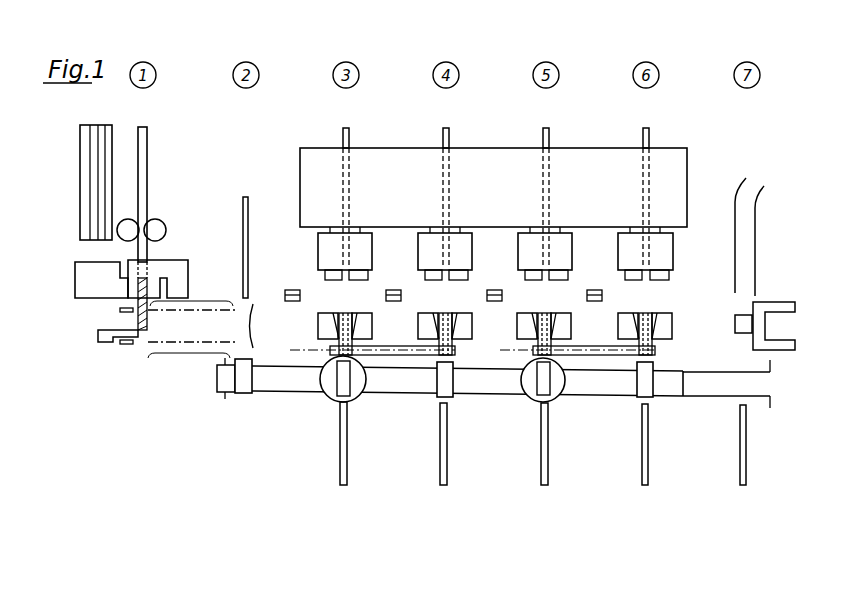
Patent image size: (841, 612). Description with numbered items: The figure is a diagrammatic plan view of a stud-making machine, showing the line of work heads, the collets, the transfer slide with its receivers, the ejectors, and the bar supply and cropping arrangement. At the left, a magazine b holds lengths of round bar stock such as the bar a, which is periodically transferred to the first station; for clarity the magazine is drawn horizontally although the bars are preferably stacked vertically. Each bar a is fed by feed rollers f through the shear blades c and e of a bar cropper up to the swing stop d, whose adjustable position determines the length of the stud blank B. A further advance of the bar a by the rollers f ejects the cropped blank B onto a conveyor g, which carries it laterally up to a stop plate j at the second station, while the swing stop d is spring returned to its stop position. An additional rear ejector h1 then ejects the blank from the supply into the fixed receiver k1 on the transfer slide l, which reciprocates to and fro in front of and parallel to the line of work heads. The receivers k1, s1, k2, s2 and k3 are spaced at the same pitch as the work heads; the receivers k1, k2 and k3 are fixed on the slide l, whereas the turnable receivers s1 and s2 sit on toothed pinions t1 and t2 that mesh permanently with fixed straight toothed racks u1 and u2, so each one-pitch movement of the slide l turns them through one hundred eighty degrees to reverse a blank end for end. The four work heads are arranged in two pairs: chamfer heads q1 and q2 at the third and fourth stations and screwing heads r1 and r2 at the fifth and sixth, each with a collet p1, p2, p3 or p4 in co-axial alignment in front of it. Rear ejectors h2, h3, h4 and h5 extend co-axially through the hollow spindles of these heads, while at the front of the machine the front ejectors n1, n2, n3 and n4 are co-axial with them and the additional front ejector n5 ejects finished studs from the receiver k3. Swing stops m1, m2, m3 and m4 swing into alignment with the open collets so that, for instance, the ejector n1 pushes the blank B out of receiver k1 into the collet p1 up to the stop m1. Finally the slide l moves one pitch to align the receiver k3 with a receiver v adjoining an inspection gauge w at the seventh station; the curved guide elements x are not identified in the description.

The round bar stock a is at (148, 190).
The magazine b is at (80, 186).
The shear blade c is at (173, 261).
The swing stop d is at (93, 339).
The shear blade e is at (83, 270).
The feed rollers f is at (171, 229).
The conveyor g is at (170, 351).
The stud blank B is at (147, 322).
The rear ejector h1 is at (258, 238).
The rear ejector h2 is at (335, 194).
The rear ejector h3 is at (435, 194).
The rear ejector h4 is at (535, 194).
The rear ejector h5 is at (635, 194).
The stop plate j is at (259, 330).
The fixed receiver k1 is at (252, 392).
The fixed receiver k2 is at (453, 394).
The fixed receiver k3 is at (653, 394).
The transfer slide l is at (311, 401).
The swing stop m1 is at (305, 299).
The swing stop m2 is at (407, 299).
The swing stop m3 is at (508, 299).
The swing stop m4 is at (608, 299).
The front ejector n1 is at (355, 446).
The front ejector n2 is at (455, 447).
The front ejector n3 is at (556, 447).
The front ejector n4 is at (656, 447).
The front ejector n5 is at (754, 448).
The collet p1 is at (358, 318).
The collet p2 is at (458, 318).
The collet p3 is at (557, 318).
The collet p4 is at (658, 318).
The chamfer head q1 is at (357, 253).
The chamfer head q2 is at (457, 253).
The screwing head r1 is at (557, 253).
The screwing head r2 is at (658, 253).
The turnable receiver s1 is at (358, 396).
The turnable receiver s2 is at (557, 396).
The toothed pinion t1 is at (351, 388).
The toothed pinion t2 is at (551, 388).
The straight toothed rack u1 is at (430, 364).
The straight toothed rack u2 is at (622, 364).
The receiver v is at (729, 327).
The inspection gauge w is at (796, 326).
The guide plates x is at (755, 230).